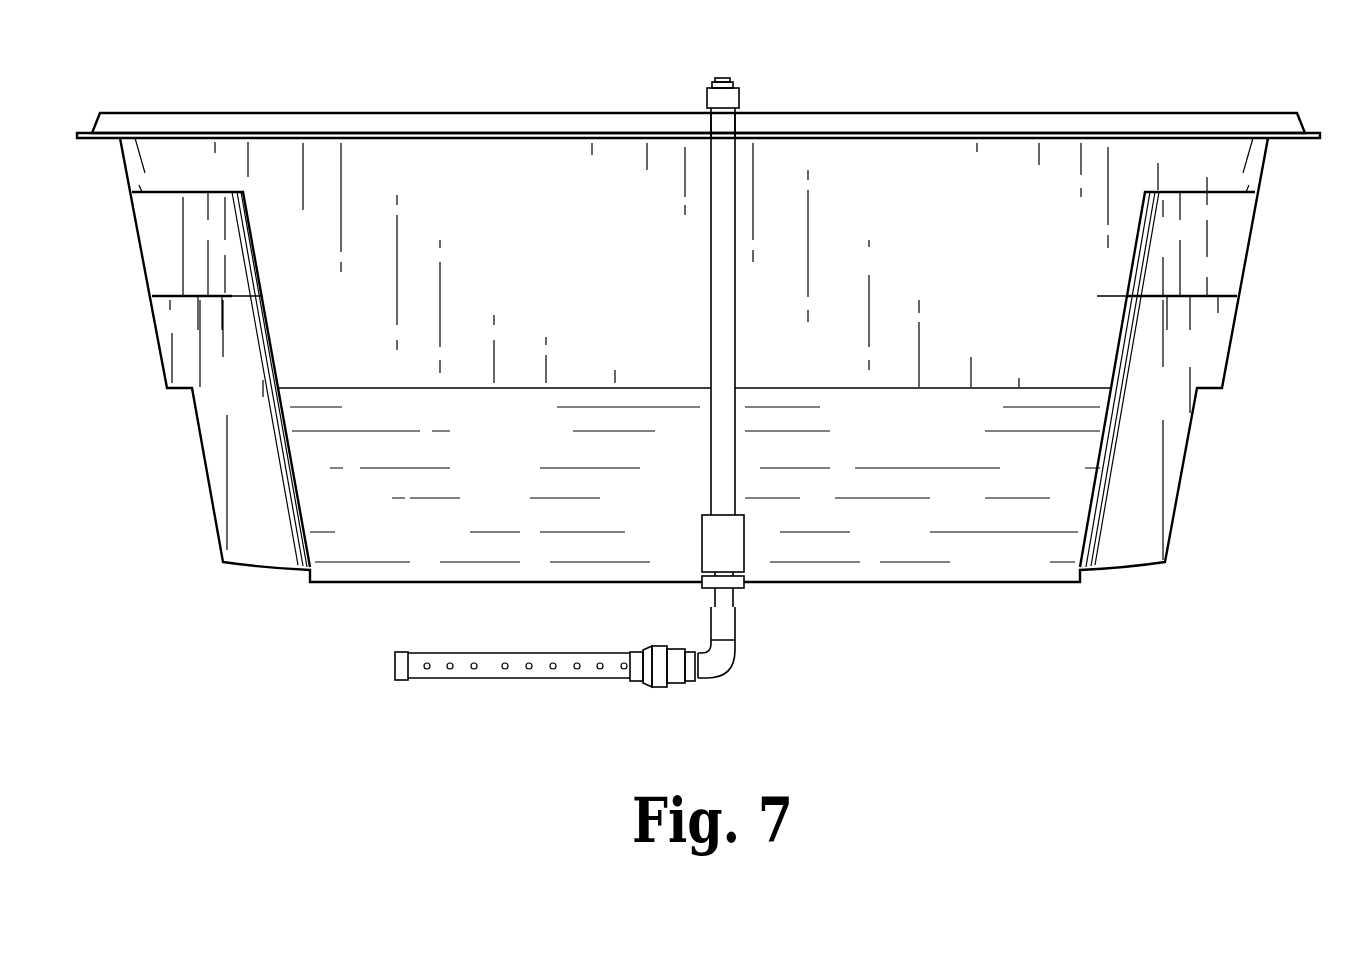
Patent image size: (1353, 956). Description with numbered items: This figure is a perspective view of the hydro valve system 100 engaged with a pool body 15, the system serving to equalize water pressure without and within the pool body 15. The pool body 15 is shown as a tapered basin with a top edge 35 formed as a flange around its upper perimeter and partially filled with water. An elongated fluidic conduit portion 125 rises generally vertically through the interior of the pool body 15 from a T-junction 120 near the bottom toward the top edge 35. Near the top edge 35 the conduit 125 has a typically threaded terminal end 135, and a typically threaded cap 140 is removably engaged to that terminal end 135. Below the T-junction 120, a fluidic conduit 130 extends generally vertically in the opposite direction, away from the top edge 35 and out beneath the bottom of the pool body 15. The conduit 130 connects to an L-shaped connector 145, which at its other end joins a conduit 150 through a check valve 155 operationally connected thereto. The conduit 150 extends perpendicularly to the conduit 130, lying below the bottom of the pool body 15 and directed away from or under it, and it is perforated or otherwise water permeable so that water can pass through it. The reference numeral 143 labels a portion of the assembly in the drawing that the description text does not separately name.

The pool body 15 is at (508, 186).
The top edge 35 is at (1155, 115).
The hydro valve system 100 is at (344, 619).
The T-junction 120 is at (745, 548).
The elongated fluidic conduit portion 125 is at (708, 293).
The fluidic conduit 130 is at (737, 628).
The terminal end 135 is at (735, 122).
The cap 140 is at (705, 102).
The elbow outlet leg 143 is at (720, 662).
The L-shaped connector 145 is at (722, 82).
The conduit 150 is at (575, 678).
The check valve 155 is at (663, 687).